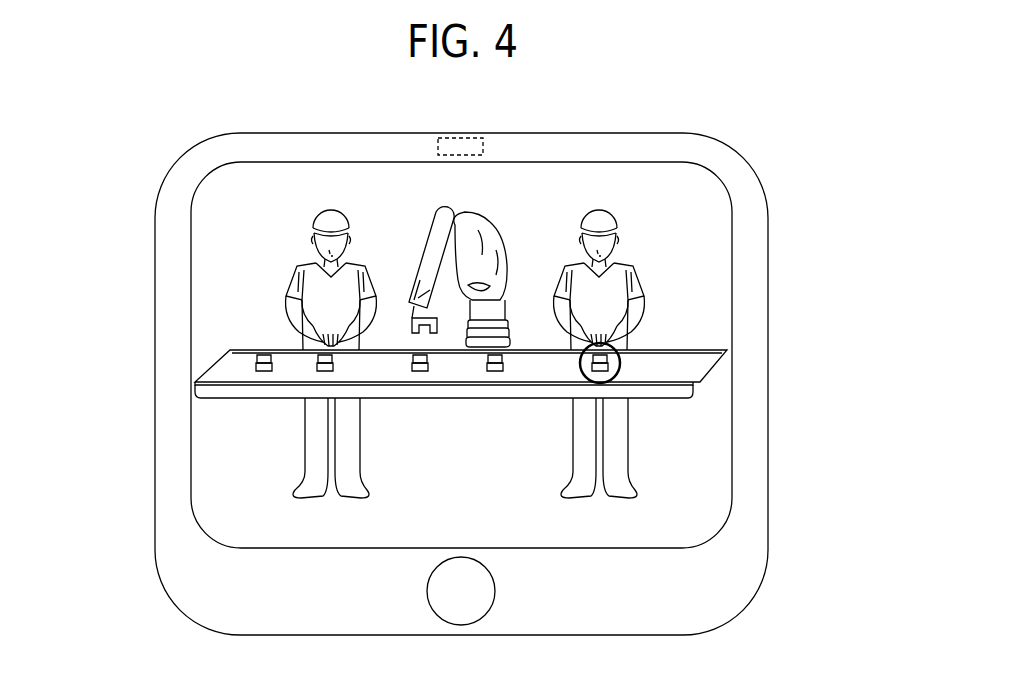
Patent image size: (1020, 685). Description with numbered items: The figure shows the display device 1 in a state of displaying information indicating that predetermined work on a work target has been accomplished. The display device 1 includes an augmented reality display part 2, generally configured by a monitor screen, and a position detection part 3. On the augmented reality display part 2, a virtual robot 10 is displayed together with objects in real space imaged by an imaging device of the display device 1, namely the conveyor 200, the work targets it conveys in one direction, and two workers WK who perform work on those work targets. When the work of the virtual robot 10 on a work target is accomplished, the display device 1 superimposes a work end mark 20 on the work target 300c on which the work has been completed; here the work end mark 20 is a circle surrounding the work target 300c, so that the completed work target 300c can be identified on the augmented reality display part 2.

The display device 1 is at (755, 133).
The augmented reality display part 2 is at (732, 450).
The position detection part 3 is at (438, 143).
The virtual robot 10 is at (491, 207).
The work end mark 20 is at (610, 346).
The conveyor 200 is at (225, 353).
The work target on which the work has been completed 300c is at (612, 366).
The worker WK is at (292, 285).